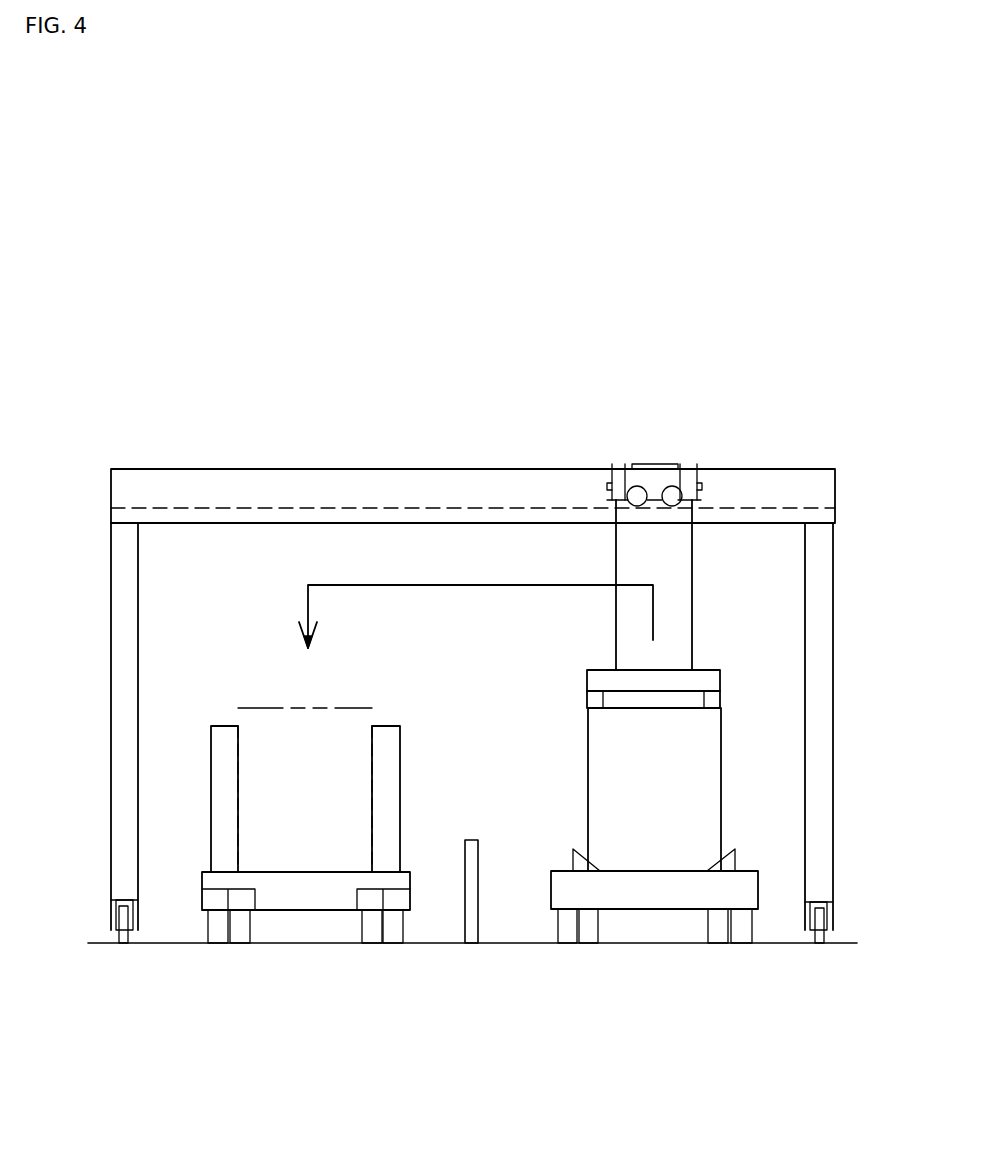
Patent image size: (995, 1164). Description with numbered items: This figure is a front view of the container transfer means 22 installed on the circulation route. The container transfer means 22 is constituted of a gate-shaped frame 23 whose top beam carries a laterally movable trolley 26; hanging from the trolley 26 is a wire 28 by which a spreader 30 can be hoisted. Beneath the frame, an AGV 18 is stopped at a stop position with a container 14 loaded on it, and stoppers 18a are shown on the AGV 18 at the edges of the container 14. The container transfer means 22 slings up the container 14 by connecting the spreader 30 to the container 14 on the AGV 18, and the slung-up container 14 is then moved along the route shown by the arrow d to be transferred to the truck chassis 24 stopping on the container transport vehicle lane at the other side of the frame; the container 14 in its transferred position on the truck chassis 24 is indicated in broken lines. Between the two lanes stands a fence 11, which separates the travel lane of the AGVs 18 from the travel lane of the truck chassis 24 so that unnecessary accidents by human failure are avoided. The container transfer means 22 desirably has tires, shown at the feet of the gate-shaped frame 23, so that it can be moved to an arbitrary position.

The fence 11 is at (478, 912).
The container 14 is at (712, 794).
The AGV 18 is at (758, 886).
The stopper 18a is at (758, 871).
The container transfer means 22 is at (769, 468).
The gate-shaped frame 23 is at (826, 621).
The truck chassis 24 is at (222, 726).
The trolley 26 is at (655, 464).
The wire 28 is at (693, 569).
The spreader 30 is at (720, 680).
The arrow d is at (482, 588).